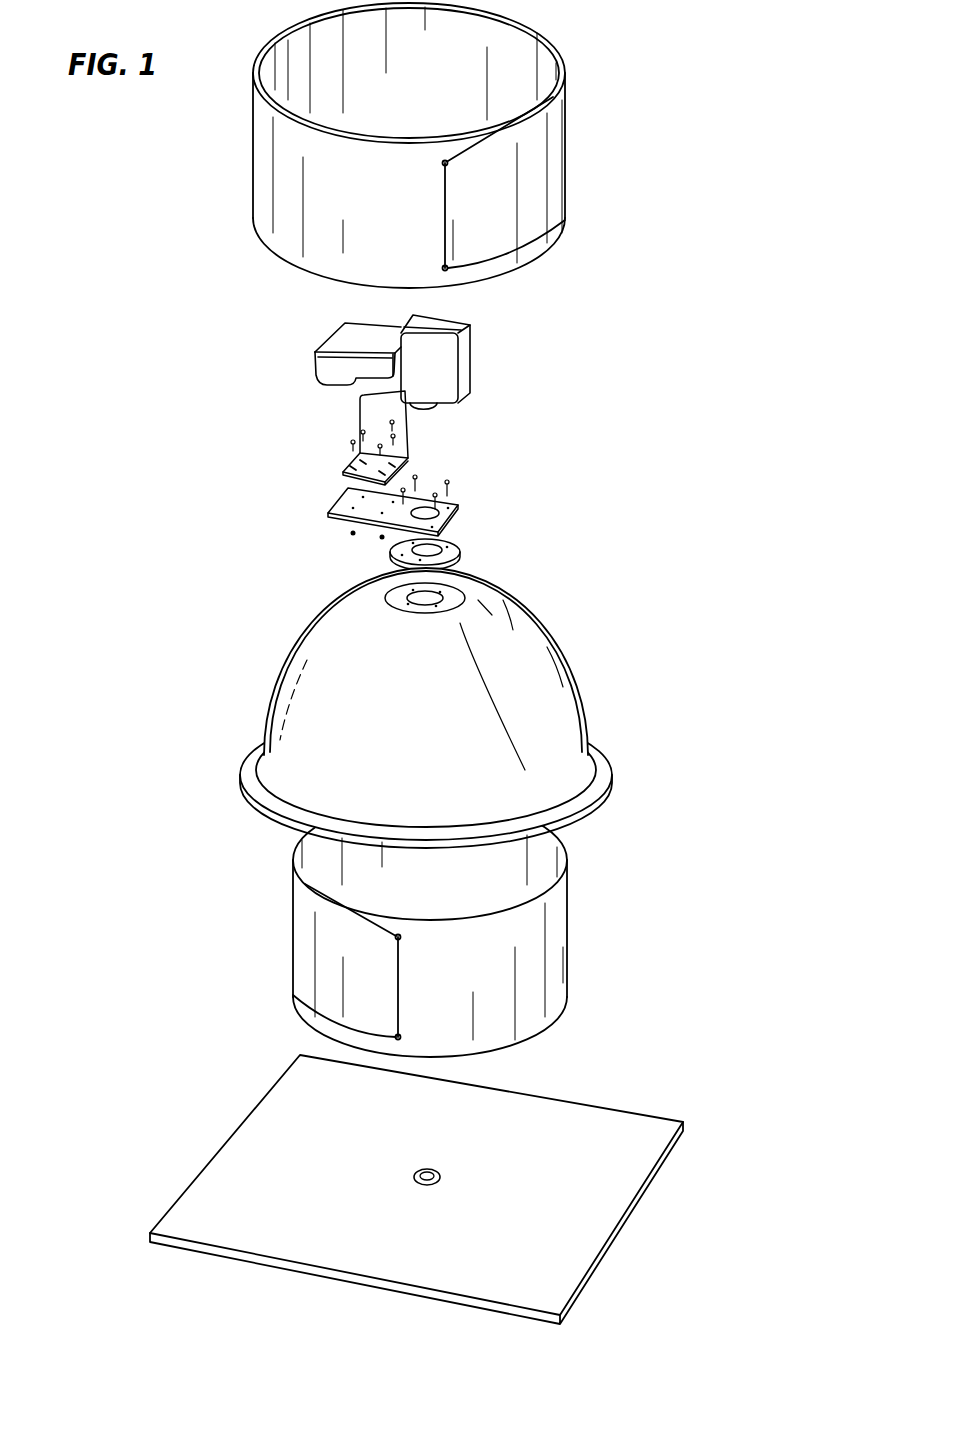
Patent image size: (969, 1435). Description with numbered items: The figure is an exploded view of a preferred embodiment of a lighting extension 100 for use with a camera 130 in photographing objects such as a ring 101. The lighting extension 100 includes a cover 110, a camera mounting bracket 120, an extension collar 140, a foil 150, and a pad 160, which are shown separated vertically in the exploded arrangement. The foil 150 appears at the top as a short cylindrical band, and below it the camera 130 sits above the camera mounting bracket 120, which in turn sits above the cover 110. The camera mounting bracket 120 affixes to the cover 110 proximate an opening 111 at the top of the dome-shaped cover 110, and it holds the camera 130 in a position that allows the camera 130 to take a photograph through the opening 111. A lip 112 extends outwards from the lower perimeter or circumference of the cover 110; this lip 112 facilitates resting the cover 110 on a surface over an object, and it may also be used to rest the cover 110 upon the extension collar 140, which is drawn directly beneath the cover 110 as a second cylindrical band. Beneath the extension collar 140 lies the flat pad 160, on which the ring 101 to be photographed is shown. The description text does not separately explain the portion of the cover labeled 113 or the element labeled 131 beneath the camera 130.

The lighting extension 100 is at (708, 292).
The ring 101 is at (442, 1175).
The cover 110 is at (555, 642).
The opening 111 is at (443, 597).
The lip 112 is at (587, 796).
The dome window surface 113 is at (353, 647).
The camera mounting bracket 120 is at (477, 401).
The camera 130 is at (447, 362).
The camera connector/cable 131 is at (425, 408).
The extension collar 140 is at (553, 916).
The foil 150 is at (541, 176).
The pad 160 is at (248, 1182).